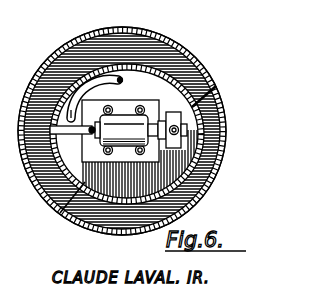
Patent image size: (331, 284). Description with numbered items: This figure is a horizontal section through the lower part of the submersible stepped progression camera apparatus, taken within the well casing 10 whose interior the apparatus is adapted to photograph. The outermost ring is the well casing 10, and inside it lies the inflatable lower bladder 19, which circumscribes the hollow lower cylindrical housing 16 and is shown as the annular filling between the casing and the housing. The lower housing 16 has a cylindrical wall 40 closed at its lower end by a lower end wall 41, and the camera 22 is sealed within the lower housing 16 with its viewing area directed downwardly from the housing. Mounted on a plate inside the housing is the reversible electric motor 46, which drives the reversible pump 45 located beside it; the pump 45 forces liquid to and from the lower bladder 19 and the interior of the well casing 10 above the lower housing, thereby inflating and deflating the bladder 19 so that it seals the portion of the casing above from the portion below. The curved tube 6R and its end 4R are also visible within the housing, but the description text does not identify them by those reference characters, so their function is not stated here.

The well casing 10 is at (178, 43).
The lower cylindrical housing 16 is at (212, 82).
The lower bladder 19 is at (197, 63).
The cylindrical wall 40 is at (148, 58).
The lower end wall 41 is at (60, 213).
The camera 22 is at (115, 160).
The reversible electric motor 46 is at (100, 133).
The reversible pump 45 is at (173, 110).
The curved tube 6R is at (121, 78).
The tube end 4R is at (57, 114).